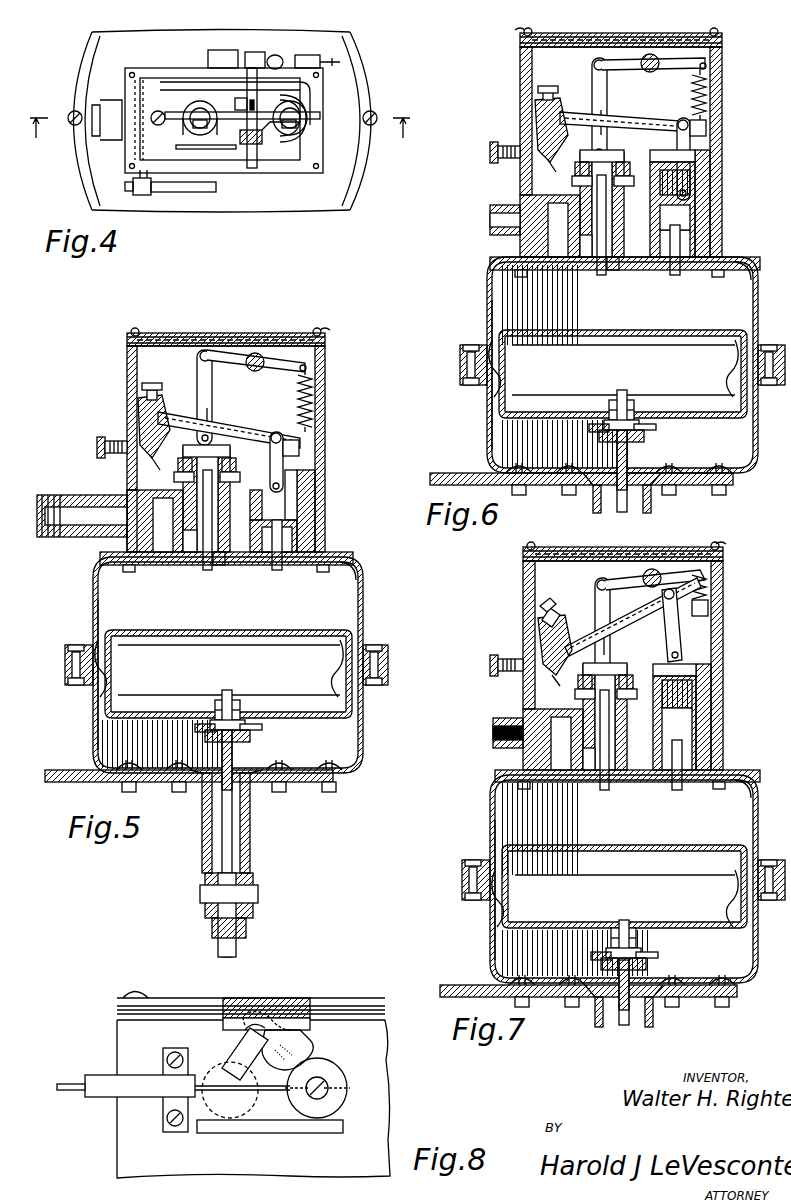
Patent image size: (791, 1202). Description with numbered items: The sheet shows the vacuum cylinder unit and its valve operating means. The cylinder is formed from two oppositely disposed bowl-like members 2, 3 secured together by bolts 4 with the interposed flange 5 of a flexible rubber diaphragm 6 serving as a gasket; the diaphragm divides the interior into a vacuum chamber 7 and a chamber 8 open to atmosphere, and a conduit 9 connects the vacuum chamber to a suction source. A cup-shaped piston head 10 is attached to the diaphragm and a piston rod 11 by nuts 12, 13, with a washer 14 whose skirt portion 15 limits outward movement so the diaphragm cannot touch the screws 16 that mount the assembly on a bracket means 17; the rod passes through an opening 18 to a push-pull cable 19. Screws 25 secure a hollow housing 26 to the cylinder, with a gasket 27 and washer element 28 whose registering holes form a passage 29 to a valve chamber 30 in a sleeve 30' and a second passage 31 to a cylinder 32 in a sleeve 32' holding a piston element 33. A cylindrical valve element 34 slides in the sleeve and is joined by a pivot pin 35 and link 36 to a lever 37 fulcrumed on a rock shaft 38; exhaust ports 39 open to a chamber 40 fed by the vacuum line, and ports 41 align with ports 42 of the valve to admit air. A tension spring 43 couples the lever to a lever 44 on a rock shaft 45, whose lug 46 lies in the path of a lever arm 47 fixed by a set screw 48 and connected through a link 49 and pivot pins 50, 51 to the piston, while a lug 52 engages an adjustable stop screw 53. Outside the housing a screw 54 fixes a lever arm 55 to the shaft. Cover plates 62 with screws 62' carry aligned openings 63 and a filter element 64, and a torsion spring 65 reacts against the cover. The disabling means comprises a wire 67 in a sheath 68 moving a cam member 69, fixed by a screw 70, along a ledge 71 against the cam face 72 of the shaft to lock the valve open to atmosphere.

In FIG. 5, the bowl-like member 2 is at (358, 736).
In FIG. 6, the bowl-like member 2 is at (490, 430).
In FIG. 7, the bowl-like member 2 is at (493, 922).
In FIG. 4, the bowl-like member 3 is at (345, 95).
In FIG. 5, the bowl-like member 3 is at (362, 603).
In FIG. 6, the bowl-like member 3 is at (487, 303).
In FIG. 7, the bowl-like member 3 is at (490, 818).
In FIG. 4, the bolts 4 is at (78, 148).
In FIG. 5, the bolts 4 is at (78, 645).
In FIG. 6, the bolts 4 is at (472, 345).
In FIG. 7, the bolts 4 is at (478, 860).
In FIG. 4, the flange 5 is at (220, 142).
In FIG. 5, the flange 5 is at (65, 670).
In FIG. 6, the flange 5 is at (460, 366).
In FIG. 7, the flange 5 is at (462, 880).
In FIG. 5, the flexible rubber diaphragm 6 is at (215, 650).
In FIG. 6, the flexible rubber diaphragm 6 is at (615, 352).
In FIG. 7, the flexible rubber diaphragm 6 is at (745, 900).
In FIG. 5, the vacuum chamber 7 is at (350, 585).
In FIG. 6, the vacuum chamber 7 is at (745, 290).
In FIG. 7, the vacuum chamber 7 is at (740, 818).
In FIG. 5, the chamber 8 is at (352, 760).
In FIG. 6, the chamber 8 is at (747, 448).
In FIG. 7, the chamber 8 is at (750, 975).
In FIG. 4, the hose or conduit 9 is at (100, 105).
In FIG. 5, the hose or conduit 9 is at (62, 495).
In FIG. 5, the piston head 10 is at (170, 712).
In FIG. 6, the piston head 10 is at (567, 412).
In FIG. 5, the piston rod 11 is at (228, 690).
In FIG. 6, the piston rod 11 is at (630, 386).
In FIG. 7, the piston rod 11 is at (624, 920).
In FIG. 5, the nut 12 is at (240, 705).
In FIG. 6, the nut 12 is at (634, 405).
In FIG. 7, the nut 12 is at (636, 942).
In FIG. 5, the nut 13 is at (246, 728).
In FIG. 6, the nut 13 is at (640, 428).
In FIG. 7, the nut 13 is at (606, 952).
In FIG. 5, the washer 14 is at (214, 742).
In FIG. 6, the washer 14 is at (640, 442).
In FIG. 7, the washer 14 is at (644, 962).
In FIG. 5, the skirt portion 15 is at (262, 728).
In FIG. 6, the skirt portion 15 is at (656, 428).
In FIG. 7, the skirt portion 15 is at (656, 955).
In FIG. 5, the screws 16 is at (172, 792).
In FIG. 6, the screws 16 is at (563, 493).
In FIG. 7, the screws 16 is at (566, 1007).
In FIG. 5, the supporting bracket means 17 is at (60, 764).
In FIG. 6, the supporting bracket means 17 is at (468, 473).
In FIG. 7, the supporting bracket means 17 is at (468, 985).
In FIG. 5, the opening 18 is at (232, 770).
In FIG. 6, the opening 18 is at (652, 470).
In FIG. 7, the opening 18 is at (650, 990).
In FIG. 5, the push-pull cable 19 is at (236, 852).
In FIG. 5, the screws 25 is at (128, 572).
In FIG. 6, the screws 25 is at (515, 275).
In FIG. 7, the screws 25 is at (518, 787).
In FIG. 4, the housing 26 is at (318, 168).
In FIG. 5, the housing 26 is at (127, 372).
In FIG. 6, the housing 26 is at (520, 80).
In FIG. 7, the housing 26 is at (523, 582).
In FIG. 5, the gasket 27 is at (325, 555).
In FIG. 6, the gasket 27 is at (722, 258).
In FIG. 7, the gasket 27 is at (723, 772).
In FIG. 5, the washer element 28 is at (228, 565).
In FIG. 6, the washer element 28 is at (622, 270).
In FIG. 5, the passage 29 is at (207, 565).
In FIG. 6, the passage 29 is at (602, 275).
In FIG. 7, the passage 29 is at (604, 788).
In FIG. 5, the valve chamber 30 is at (192, 532).
In FIG. 6, the valve chamber 30 is at (581, 232).
In FIG. 7, the valve chamber 30 is at (589, 717).
In FIG. 4, the sleeve 30' is at (206, 187).
In FIG. 5, the second passage 31 is at (276, 565).
In FIG. 6, the second passage 31 is at (676, 272).
In FIG. 7, the second passage 31 is at (678, 788).
In FIG. 5, the cylinder 32 is at (305, 512).
In FIG. 6, the cylinder 32 is at (703, 209).
In FIG. 7, the cylinder 32 is at (707, 723).
In FIG. 4, the sleeve 32' is at (295, 129).
In FIG. 5, the sleeve 32' is at (325, 505).
In FIG. 6, the sleeve 32' is at (705, 203).
In FIG. 7, the sleeve 32' is at (709, 714).
In FIG. 5, the piston element 33 is at (315, 530).
In FIG. 6, the piston element 33 is at (697, 222).
In FIG. 4, the cylindrical valve element 34 is at (200, 128).
In FIG. 5, the cylindrical valve element 34 is at (185, 452).
In FIG. 6, the cylindrical valve element 34 is at (581, 153).
In FIG. 7, the cylindrical valve element 34 is at (588, 664).
In FIG. 5, the pivot pin 35 is at (204, 420).
In FIG. 6, the pivot pin 35 is at (598, 118).
In FIG. 7, the pivot pin 35 is at (607, 648).
In FIG. 4, the link 36 is at (197, 130).
In FIG. 5, the link 36 is at (205, 392).
In FIG. 6, the link 36 is at (598, 90).
In FIG. 7, the link 36 is at (600, 592).
In FIG. 5, the lever 37 is at (275, 350).
In FIG. 6, the lever 37 is at (670, 58).
In FIG. 7, the lever 37 is at (675, 570).
In FIG. 8, the lever 37 is at (302, 1042).
In FIG. 5, the rock shaft 38 is at (254, 352).
In FIG. 6, the rock shaft 38 is at (648, 53).
In FIG. 7, the rock shaft 38 is at (643, 576).
In FIG. 8, the rock shaft 38 is at (260, 1030).
In FIG. 5, the exhaust ports 39 is at (183, 532).
In FIG. 6, the exhaust ports 39 is at (580, 237).
In FIG. 7, the exhaust ports 39 is at (583, 756).
In FIG. 5, the chamber 40 is at (172, 551).
In FIG. 6, the chamber 40 is at (548, 243).
In FIG. 7, the chamber 40 is at (551, 760).
In FIG. 5, the ports 41 is at (183, 480).
In FIG. 6, the ports 41 is at (574, 182).
In FIG. 7, the ports 41 is at (577, 694).
In FIG. 5, the ports 42 is at (183, 465).
In FIG. 6, the ports 42 is at (578, 170).
In FIG. 7, the ports 42 is at (580, 682).
In FIG. 4, the tension spring 43 is at (315, 105).
In FIG. 5, the tension spring 43 is at (314, 400).
In FIG. 6, the tension spring 43 is at (708, 85).
In FIG. 7, the tension spring 43 is at (708, 590).
In FIG. 4, the lever 44 is at (185, 90).
In FIG. 5, the lever 44 is at (300, 450).
In FIG. 6, the lever 44 is at (706, 128).
In FIG. 7, the lever 44 is at (708, 612).
In FIG. 4, the rock shaft 45 is at (142, 186).
In FIG. 5, the rock shaft 45 is at (140, 418).
In FIG. 6, the rock shaft 45 is at (536, 108).
In FIG. 7, the rock shaft 45 is at (540, 632).
In FIG. 4, the lug 46 is at (235, 100).
In FIG. 5, the lug 46 is at (245, 440).
In FIG. 6, the lug 46 is at (628, 135).
In FIG. 7, the lug 46 is at (640, 645).
In FIG. 4, the lever arm 47 is at (248, 92).
In FIG. 5, the lever arm 47 is at (224, 428).
In FIG. 6, the lever arm 47 is at (618, 112).
In FIG. 7, the lever arm 47 is at (590, 622).
In FIG. 4, the set screw 48 is at (153, 122).
In FIG. 5, the set screw 48 is at (151, 384).
In FIG. 6, the set screw 48 is at (547, 85).
In FIG. 7, the set screw 48 is at (546, 602).
In FIG. 4, the link 49 is at (285, 130).
In FIG. 5, the link 49 is at (283, 462).
In FIG. 6, the link 49 is at (690, 150).
In FIG. 7, the link 49 is at (682, 648).
In FIG. 5, the pivot pin 50 is at (280, 486).
In FIG. 6, the pivot pin 50 is at (688, 193).
In FIG. 7, the pivot pin 50 is at (685, 660).
In FIG. 5, the pivot pin 51 is at (282, 438).
In FIG. 6, the pivot pin 51 is at (680, 120).
In FIG. 7, the pivot pin 51 is at (700, 630).
In FIG. 5, the lug 52 is at (148, 450).
In FIG. 6, the lug 52 is at (546, 152).
In FIG. 7, the lug 52 is at (550, 668).
In FIG. 4, the adjustable stop screw 53 is at (75, 110).
In FIG. 5, the adjustable stop screw 53 is at (97, 448).
In FIG. 6, the adjustable stop screw 53 is at (490, 152).
In FIG. 7, the adjustable stop screw 53 is at (490, 665).
In FIG. 4, the screw 54 is at (133, 185).
In FIG. 4, the lever arm 55 is at (180, 192).
In FIG. 5, the plates 62 is at (246, 327).
In FIG. 6, the plates 62 is at (601, 47).
In FIG. 7, the plates 62 is at (643, 557).
In FIG. 8, the plates 62 is at (229, 1080).
In FIG. 5, the screws 62' is at (333, 313).
In FIG. 6, the screws 62' is at (514, 21).
In FIG. 7, the screws 62' is at (727, 531).
In FIG. 8, the screws 62' is at (134, 982).
In FIG. 5, the openings 63 is at (157, 333).
In FIG. 6, the openings 63 is at (540, 33).
In FIG. 7, the openings 63 is at (625, 547).
In FIG. 5, the filter element 64 is at (326, 345).
In FIG. 6, the filter element 64 is at (520, 42).
In FIG. 7, the filter element 64 is at (723, 556).
In FIG. 8, the filter element 64 is at (117, 1010).
In FIG. 4, the torsion spring 65 is at (300, 128).
In FIG. 5, the torsion spring 65 is at (300, 372).
In FIG. 6, the torsion spring 65 is at (700, 70).
In FIG. 4, the wire 67 is at (340, 62).
In FIG. 8, the wire 67 is at (64, 1090).
In FIG. 8, the flexible sheath 68 is at (100, 1098).
In FIG. 4, the cam member 69 is at (222, 50).
In FIG. 8, the cam member 69 is at (345, 1075).
In FIG. 8, the screw 70 is at (340, 1098).
In FIG. 4, the ledge 71 is at (280, 56).
In FIG. 8, the ledge 71 is at (343, 1126).
In FIG. 4, the cam face 72 is at (270, 46).
In FIG. 8, the cam face 72 is at (268, 1098).